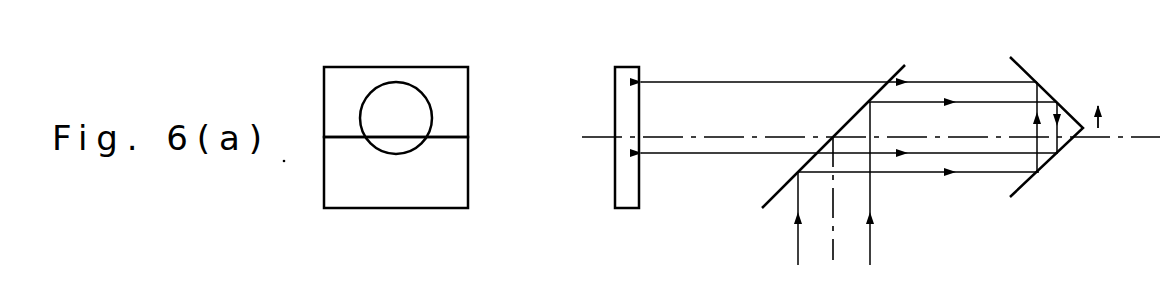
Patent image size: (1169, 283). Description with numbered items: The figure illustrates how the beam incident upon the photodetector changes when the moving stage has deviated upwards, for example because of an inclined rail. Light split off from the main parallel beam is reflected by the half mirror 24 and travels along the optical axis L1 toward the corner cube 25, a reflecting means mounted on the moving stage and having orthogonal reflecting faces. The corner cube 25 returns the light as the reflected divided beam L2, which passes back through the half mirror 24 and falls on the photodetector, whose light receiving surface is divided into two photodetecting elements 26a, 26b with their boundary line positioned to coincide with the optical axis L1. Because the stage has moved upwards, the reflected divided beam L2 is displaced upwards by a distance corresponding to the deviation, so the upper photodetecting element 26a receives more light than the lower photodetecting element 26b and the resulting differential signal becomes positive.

The photodetecting element 26a is at (615, 104).
The photodetecting element 26b is at (615, 176).
The reflected divided beam L2 is at (415, 84).
The half mirror 24 is at (883, 82).
The corner cube 25 is at (1040, 82).
The optical axis of the divided beam L1 is at (1122, 121).